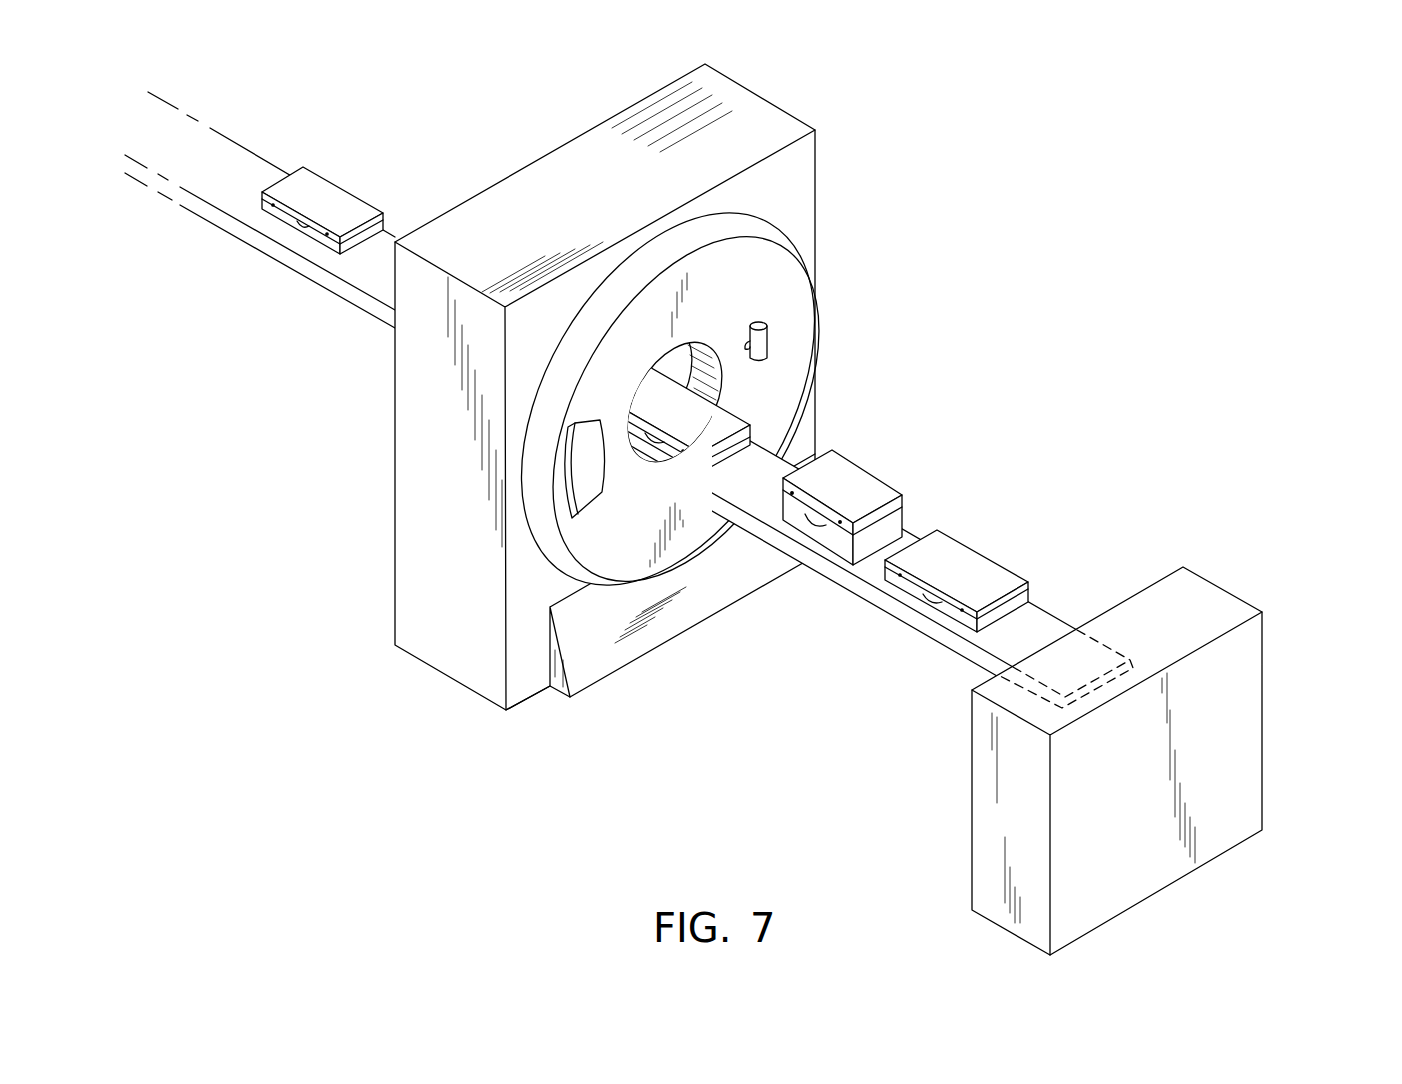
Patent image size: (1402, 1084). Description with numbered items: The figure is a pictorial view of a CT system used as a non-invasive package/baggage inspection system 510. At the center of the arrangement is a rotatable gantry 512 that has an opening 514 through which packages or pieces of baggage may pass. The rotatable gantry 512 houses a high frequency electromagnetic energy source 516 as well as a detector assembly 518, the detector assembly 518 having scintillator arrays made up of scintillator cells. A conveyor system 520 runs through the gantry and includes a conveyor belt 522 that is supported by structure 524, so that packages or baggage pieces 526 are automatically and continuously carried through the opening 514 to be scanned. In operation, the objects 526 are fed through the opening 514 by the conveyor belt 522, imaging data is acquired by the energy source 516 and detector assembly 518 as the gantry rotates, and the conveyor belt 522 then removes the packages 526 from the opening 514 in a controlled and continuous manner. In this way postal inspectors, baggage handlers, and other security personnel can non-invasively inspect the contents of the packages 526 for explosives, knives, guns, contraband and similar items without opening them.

The package/baggage inspection system 510 is at (759, 387).
The rotatable gantry 512 is at (706, 283).
The opening 514 is at (709, 338).
The high frequency electromagnetic energy source 516 is at (768, 345).
The detector assembly 518 is at (592, 433).
The conveyor system 520 is at (728, 333).
The conveyor belt 522 is at (363, 273).
The structure 524 is at (1250, 713).
The packages or baggage pieces 526 is at (335, 193).